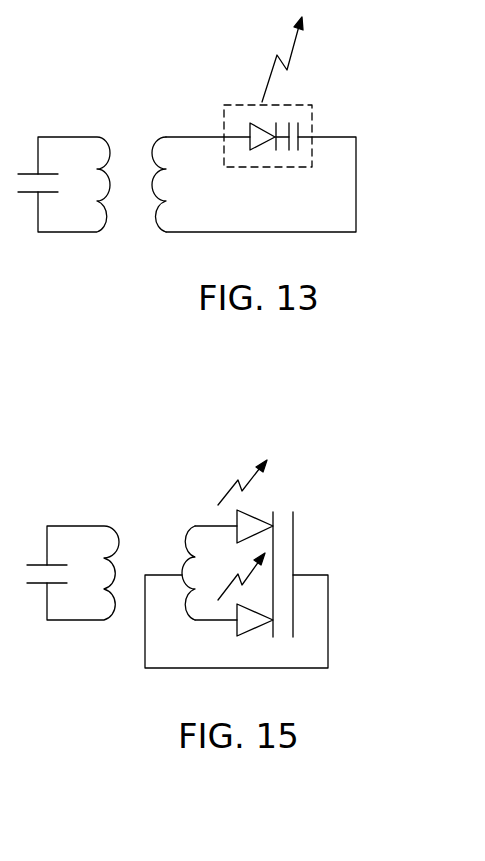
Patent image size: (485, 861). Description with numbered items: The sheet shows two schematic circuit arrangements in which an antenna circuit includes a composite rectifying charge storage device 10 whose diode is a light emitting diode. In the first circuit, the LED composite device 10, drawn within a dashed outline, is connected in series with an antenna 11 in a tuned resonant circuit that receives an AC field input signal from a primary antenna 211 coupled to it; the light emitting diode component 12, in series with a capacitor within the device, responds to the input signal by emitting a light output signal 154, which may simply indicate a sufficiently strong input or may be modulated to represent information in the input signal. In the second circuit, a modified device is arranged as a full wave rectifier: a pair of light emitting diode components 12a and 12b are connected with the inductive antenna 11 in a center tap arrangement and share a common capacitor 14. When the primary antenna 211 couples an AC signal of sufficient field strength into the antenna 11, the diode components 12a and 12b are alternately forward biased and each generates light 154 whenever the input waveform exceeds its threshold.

In FIG. 13, the composite rectifying charge storage device 10 is at (219, 98).
In FIG. 13, the antenna 11 is at (153, 183).
In FIG. 15, the antenna 11 is at (182, 542).
In FIG. 13, the light emitting diode component 12 is at (262, 147).
In FIG. 15, the first light emitting diode component 12a is at (251, 511).
In FIG. 15, the second light emitting diode component 12b is at (250, 620).
In FIG. 13, the common capacitor 14 is at (288, 120).
In FIG. 15, the common capacitor 14 is at (288, 556).
In FIG. 13, the light output signal 154 is at (289, 60).
In FIG. 15, the light output signal 154 is at (233, 482).
In FIG. 13, the primary antenna 211 is at (66, 232).
In FIG. 15, the primary antenna 211 is at (78, 622).